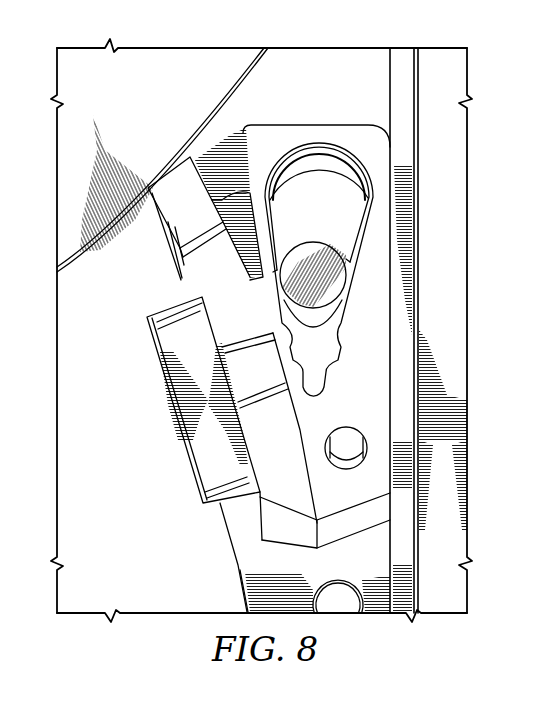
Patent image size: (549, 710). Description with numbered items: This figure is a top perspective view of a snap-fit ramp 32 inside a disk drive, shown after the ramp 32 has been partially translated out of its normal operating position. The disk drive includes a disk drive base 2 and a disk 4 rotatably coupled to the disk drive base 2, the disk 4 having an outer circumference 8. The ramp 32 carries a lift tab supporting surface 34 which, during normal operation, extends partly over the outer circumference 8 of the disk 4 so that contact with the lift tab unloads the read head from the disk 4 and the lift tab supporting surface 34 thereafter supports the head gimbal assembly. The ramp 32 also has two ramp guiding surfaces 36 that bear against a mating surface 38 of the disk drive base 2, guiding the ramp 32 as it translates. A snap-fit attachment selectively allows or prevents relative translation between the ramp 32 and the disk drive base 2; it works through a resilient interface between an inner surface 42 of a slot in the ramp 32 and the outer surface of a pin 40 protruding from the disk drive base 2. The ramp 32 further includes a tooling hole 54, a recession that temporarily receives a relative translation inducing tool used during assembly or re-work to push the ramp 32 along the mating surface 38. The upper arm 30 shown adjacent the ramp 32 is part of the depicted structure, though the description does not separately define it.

The disk drive base 2 is at (311, 58).
The disk 4 is at (152, 118).
The outer circumference 8 is at (98, 258).
The upper arm 30 is at (205, 204).
The ramp 32 is at (272, 133).
The lift tab supporting surface 34 is at (262, 450).
The ramp guiding surfaces 36 is at (395, 158).
The mating surface 38 is at (390, 97).
The pin 40 is at (295, 262).
The inner surface 42 is at (341, 258).
The tooling hole 54 is at (347, 440).